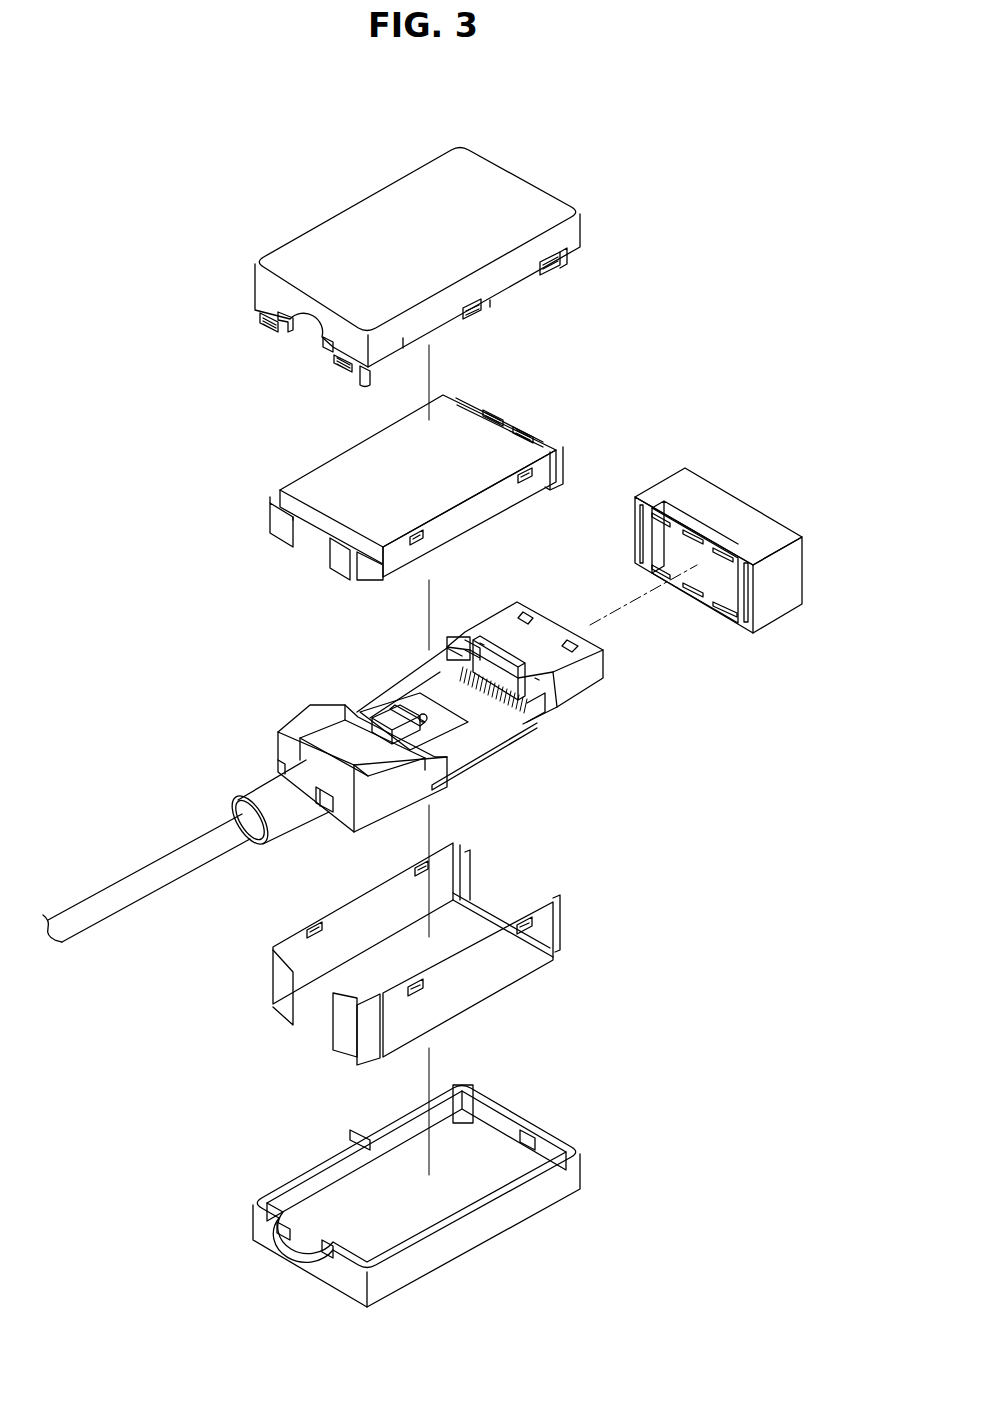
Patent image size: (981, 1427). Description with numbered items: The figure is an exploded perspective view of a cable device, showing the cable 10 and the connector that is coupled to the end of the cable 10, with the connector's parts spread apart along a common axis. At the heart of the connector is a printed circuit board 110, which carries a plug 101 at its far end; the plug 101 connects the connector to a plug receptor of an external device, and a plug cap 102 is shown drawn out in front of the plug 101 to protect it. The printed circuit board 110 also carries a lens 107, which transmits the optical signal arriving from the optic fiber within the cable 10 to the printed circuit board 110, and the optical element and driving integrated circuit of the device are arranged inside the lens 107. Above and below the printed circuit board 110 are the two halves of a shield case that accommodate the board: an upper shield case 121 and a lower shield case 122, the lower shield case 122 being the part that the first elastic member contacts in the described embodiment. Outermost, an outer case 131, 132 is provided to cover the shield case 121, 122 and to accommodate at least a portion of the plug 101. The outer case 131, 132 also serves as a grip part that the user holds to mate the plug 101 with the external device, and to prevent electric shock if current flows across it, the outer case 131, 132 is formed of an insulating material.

The cable 10 is at (134, 856).
The plug 101 is at (553, 630).
The plug cap 102 is at (732, 510).
The lens 107 is at (443, 727).
The printed circuit board 110 is at (407, 690).
The upper shield case 121 is at (335, 470).
The lower shield case 122 is at (507, 972).
The outer case 131 is at (367, 212).
The outer case 132 is at (553, 1187).